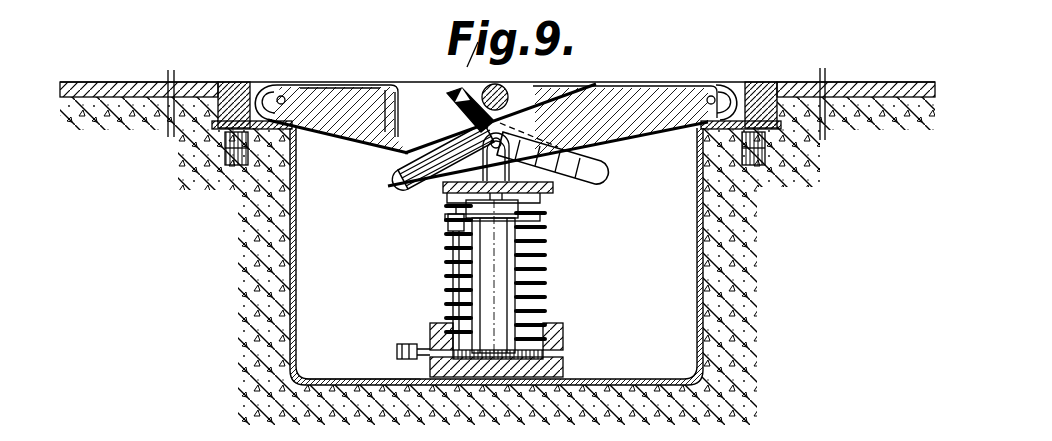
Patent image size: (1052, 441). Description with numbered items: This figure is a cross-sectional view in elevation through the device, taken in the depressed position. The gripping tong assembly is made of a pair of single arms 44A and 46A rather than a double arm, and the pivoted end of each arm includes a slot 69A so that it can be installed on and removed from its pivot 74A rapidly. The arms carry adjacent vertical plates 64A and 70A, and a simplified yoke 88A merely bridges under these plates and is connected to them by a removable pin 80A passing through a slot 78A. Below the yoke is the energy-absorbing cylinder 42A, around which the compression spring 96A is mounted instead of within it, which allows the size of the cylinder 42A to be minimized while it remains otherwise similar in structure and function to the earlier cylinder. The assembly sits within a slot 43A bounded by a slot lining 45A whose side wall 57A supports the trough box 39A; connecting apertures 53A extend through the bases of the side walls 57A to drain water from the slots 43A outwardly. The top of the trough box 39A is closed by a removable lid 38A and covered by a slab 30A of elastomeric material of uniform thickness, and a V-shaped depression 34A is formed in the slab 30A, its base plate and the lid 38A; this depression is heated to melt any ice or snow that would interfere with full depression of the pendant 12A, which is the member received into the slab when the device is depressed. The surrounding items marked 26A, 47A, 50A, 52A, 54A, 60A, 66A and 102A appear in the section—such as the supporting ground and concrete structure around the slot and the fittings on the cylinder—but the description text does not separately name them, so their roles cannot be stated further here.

The pendant 12A is at (511, 81).
The nozzle member 26A is at (455, 59).
The slab 30A is at (427, 82).
The V-shaped depression 34A is at (543, 82).
The lid 38A is at (415, 156).
The cross runway trough box 39A is at (415, 162).
The cylinder 42A is at (526, 308).
The slot 43A is at (297, 342).
The arm 44A is at (684, 72).
The slot lining 45A is at (720, 236).
The arm 46A is at (358, 72).
The earth fill 47A is at (290, 280).
The ground surface 50A is at (876, 82).
The concrete slab 52A is at (128, 93).
The connecting aperture 53A is at (530, 283).
The expansion joint 54A is at (226, 82).
The side wall 57A is at (682, 194).
The actuating arm 60A is at (440, 172).
The vertical plate 64A is at (631, 112).
The cover flange 66A is at (380, 80).
The slot 69A is at (247, 87).
The vertical plate 70A is at (315, 82).
The pivot 74A is at (284, 82).
The slot 78A is at (565, 192).
The removable pin 80A is at (452, 212).
The yoke 88A is at (544, 226).
The compression spring 96A is at (443, 290).
The pipe fitting 102A is at (398, 345).